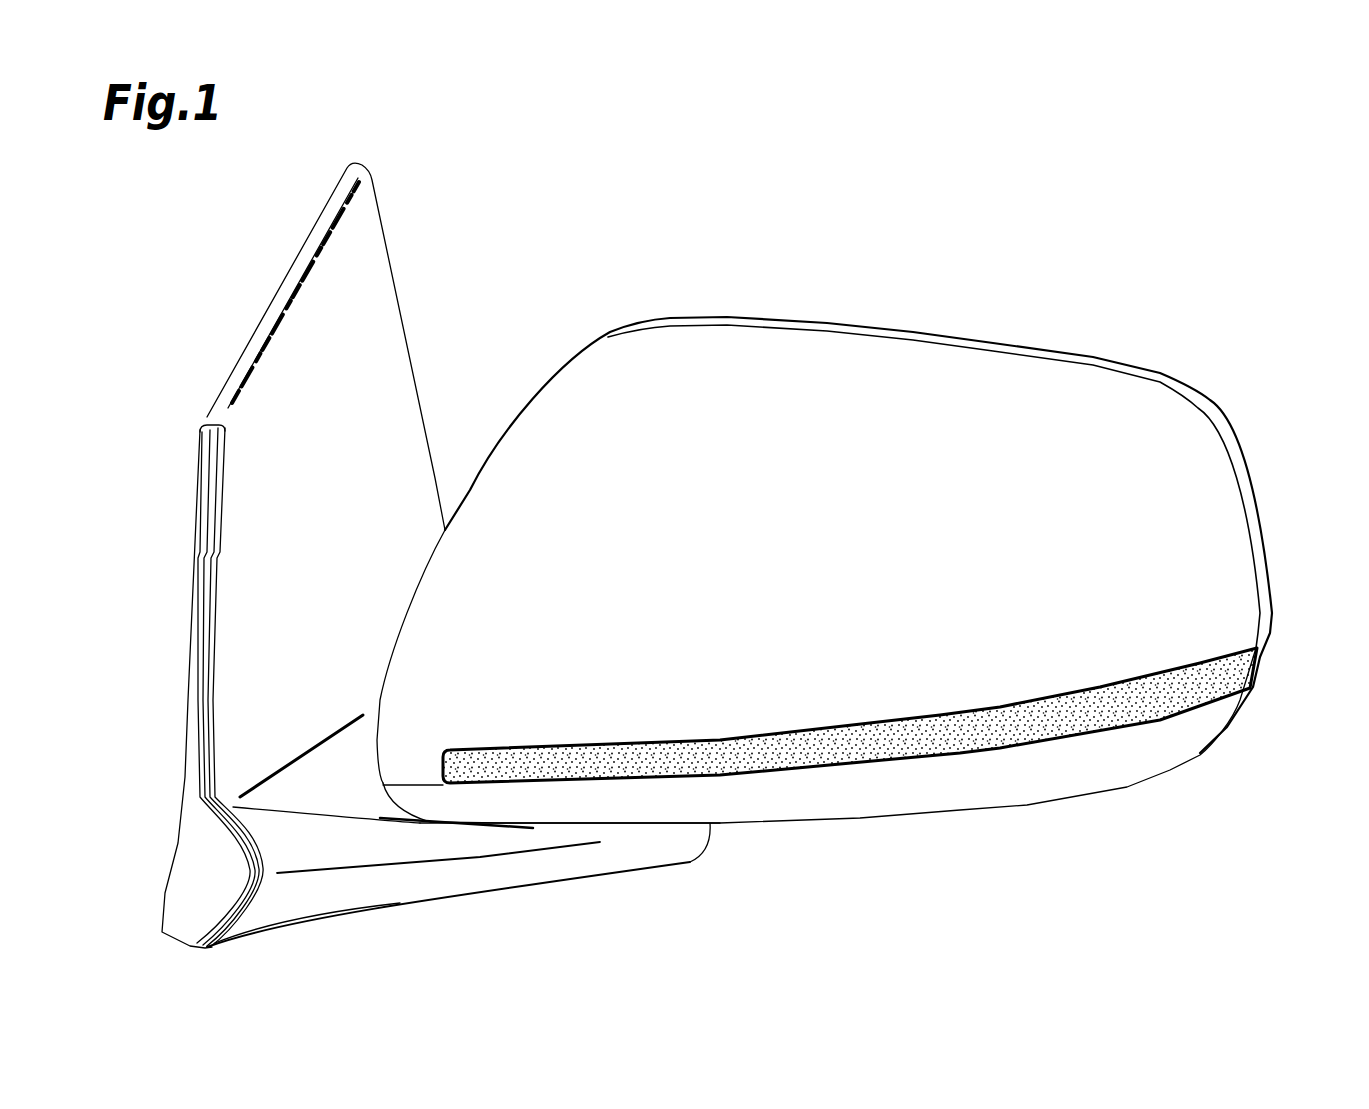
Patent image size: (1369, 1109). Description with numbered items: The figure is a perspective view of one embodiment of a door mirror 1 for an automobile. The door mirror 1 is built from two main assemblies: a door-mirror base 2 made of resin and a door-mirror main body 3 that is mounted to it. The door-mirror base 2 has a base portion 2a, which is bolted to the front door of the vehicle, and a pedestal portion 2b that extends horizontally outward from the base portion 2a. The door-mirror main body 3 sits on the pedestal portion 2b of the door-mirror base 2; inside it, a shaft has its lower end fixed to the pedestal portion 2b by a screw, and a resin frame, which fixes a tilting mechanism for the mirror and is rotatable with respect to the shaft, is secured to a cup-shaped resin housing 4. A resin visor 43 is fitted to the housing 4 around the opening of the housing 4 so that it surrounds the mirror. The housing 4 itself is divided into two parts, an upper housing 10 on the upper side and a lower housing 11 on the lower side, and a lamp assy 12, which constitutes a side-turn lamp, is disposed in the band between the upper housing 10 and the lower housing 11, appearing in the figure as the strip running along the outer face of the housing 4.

The door mirror 1 is at (841, 524).
The door-mirror base 2 is at (441, 577).
The base portion 2a is at (390, 372).
The pedestal portion 2b is at (368, 798).
The door-mirror main body 3 is at (1217, 397).
The housing 4 is at (841, 571).
The upper housing 10 is at (841, 517).
The lower housing 11 is at (963, 797).
The lamp assy 12 is at (887, 738).
The visor 43 is at (915, 332).